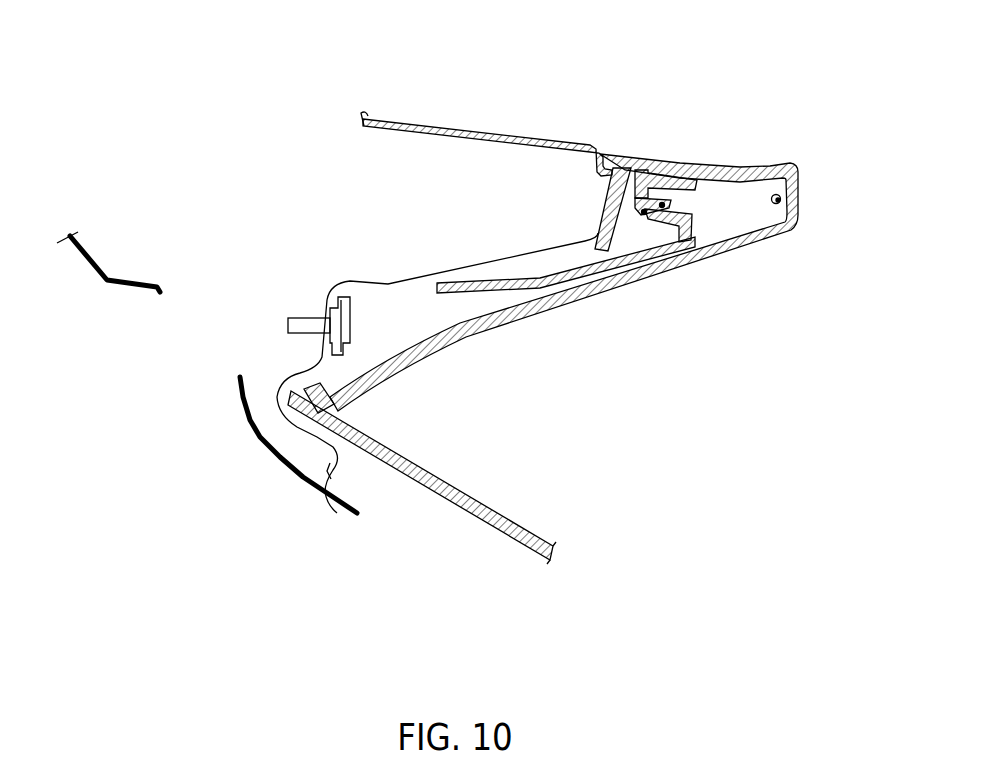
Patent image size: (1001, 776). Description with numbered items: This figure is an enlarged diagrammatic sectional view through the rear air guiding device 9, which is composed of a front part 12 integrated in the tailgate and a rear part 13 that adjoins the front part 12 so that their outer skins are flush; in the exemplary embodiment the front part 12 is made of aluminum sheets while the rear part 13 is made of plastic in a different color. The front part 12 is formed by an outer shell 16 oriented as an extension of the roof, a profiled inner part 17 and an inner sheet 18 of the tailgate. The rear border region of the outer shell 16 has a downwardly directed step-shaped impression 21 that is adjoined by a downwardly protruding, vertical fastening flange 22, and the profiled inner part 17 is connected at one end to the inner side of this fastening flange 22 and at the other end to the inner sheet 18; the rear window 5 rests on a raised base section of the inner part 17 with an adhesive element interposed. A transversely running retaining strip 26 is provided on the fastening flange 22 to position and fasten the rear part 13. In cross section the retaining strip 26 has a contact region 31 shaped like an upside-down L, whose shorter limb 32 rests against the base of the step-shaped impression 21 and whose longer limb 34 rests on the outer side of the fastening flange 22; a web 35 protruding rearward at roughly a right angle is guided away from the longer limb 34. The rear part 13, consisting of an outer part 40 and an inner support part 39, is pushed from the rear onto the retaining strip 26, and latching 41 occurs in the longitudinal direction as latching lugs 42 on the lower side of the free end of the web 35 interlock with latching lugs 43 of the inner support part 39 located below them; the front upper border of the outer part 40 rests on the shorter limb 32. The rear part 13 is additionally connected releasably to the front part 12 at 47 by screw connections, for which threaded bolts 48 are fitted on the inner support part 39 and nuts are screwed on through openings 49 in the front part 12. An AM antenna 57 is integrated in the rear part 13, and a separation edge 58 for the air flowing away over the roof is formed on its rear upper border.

The rear window 5 is at (520, 530).
The rear air guiding device 9 is at (845, 155).
The front part 12 is at (489, 109).
The rear part 13 is at (744, 145).
The outer shell 16 is at (403, 122).
The profiled inner part 17 is at (388, 284).
The inner sheet 18 is at (90, 270).
The step-shaped impression 21 is at (582, 169).
The fastening flange 22 is at (601, 217).
The retaining strip 26 is at (632, 233).
The contact region 31 is at (594, 202).
The shorter limb 32 is at (605, 158).
The longer limb 34 is at (602, 247).
The web 35 is at (638, 201).
The inner support part 39 is at (558, 280).
The outer part 40 is at (688, 262).
The latching 41 is at (691, 205).
The latching lugs 42 is at (673, 174).
The latching lugs 43 is at (652, 180).
The screw connection location 47 is at (278, 341).
The threaded bolts 48 is at (302, 324).
The openings 49 is at (187, 310).
The AM antenna 57 is at (782, 203).
The separation edge 58 is at (796, 145).